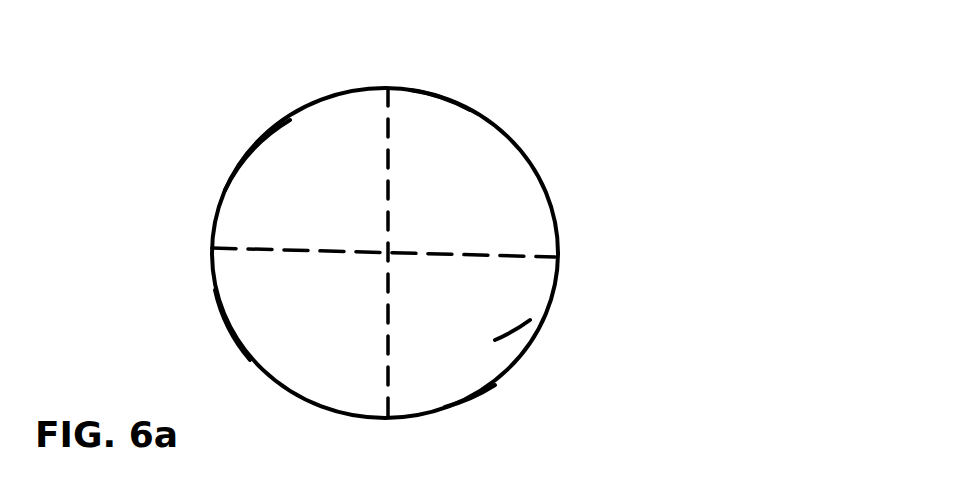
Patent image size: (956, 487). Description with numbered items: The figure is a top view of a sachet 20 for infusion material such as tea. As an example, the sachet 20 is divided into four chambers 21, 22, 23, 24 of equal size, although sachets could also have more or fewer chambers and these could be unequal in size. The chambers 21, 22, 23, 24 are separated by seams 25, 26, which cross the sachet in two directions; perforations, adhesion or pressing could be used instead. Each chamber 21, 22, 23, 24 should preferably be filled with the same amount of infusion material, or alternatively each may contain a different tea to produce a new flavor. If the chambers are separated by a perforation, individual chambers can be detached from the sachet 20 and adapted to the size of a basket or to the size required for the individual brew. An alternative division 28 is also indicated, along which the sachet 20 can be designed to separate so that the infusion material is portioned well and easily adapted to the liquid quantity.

The sachet 20 is at (563, 136).
The chamber 21 is at (437, 142).
The chamber 22 is at (505, 333).
The chamber 23 is at (263, 323).
The chamber 24 is at (265, 180).
The seam 25 is at (519, 257).
The seam 26 is at (388, 138).
The division 28 is at (477, 394).